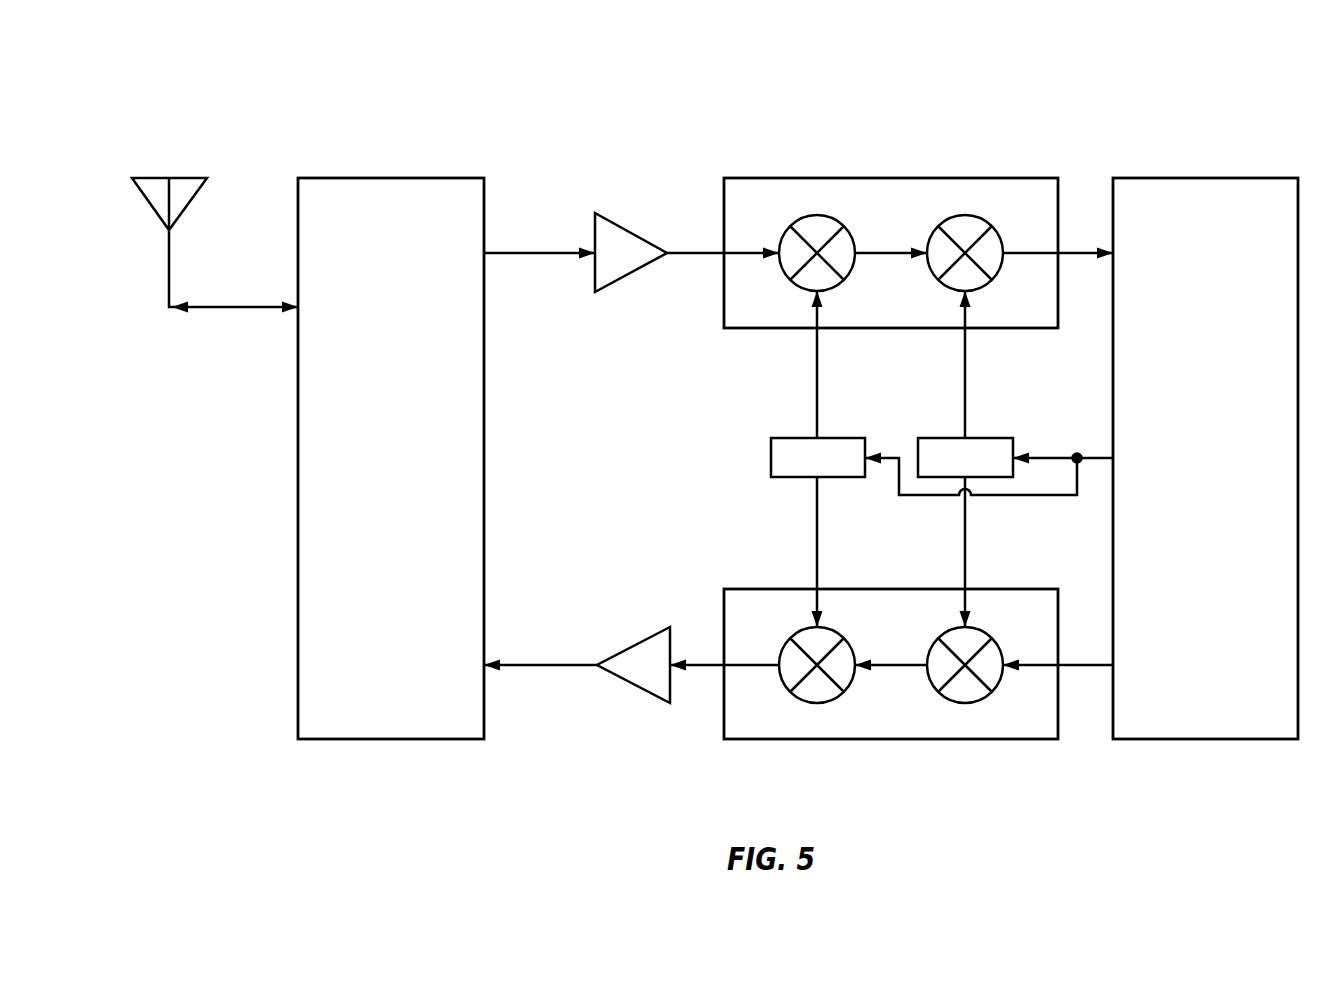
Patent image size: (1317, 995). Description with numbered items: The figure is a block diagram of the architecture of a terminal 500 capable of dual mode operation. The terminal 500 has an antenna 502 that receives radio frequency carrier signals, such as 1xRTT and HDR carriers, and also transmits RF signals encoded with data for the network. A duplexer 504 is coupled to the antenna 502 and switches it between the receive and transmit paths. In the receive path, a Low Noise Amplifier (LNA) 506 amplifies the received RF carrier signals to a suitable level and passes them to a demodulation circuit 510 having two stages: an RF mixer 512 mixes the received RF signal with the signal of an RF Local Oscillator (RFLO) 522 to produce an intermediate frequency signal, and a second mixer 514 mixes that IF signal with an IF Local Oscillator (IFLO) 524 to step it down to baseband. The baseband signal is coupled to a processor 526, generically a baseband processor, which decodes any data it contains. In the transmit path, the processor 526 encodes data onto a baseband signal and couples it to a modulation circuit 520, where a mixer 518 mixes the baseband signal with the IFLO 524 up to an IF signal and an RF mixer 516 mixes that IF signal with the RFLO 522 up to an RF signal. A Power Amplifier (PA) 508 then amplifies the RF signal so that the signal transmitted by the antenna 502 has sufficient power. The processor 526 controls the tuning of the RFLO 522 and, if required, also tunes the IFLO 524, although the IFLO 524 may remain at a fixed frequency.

The terminal 500 is at (838, 82).
The antenna 502 is at (207, 309).
The duplexer 504 is at (408, 178).
The Low Noise Amplifier (LNA) 506 is at (617, 281).
The Power Amplifier (PA) 508 is at (645, 690).
The demodulation circuit 510 is at (983, 178).
The RF mixer 512 is at (844, 226).
The mixer 514 is at (992, 226).
The RF mixer 516 is at (844, 638).
The mixer 518 is at (992, 638).
The modulation circuit 520 is at (983, 589).
The RF Local Oscillator (RFLO) 522 is at (833, 438).
The IF Local Oscillator (IFLO) 524 is at (983, 438).
The processor 526 is at (1238, 178).